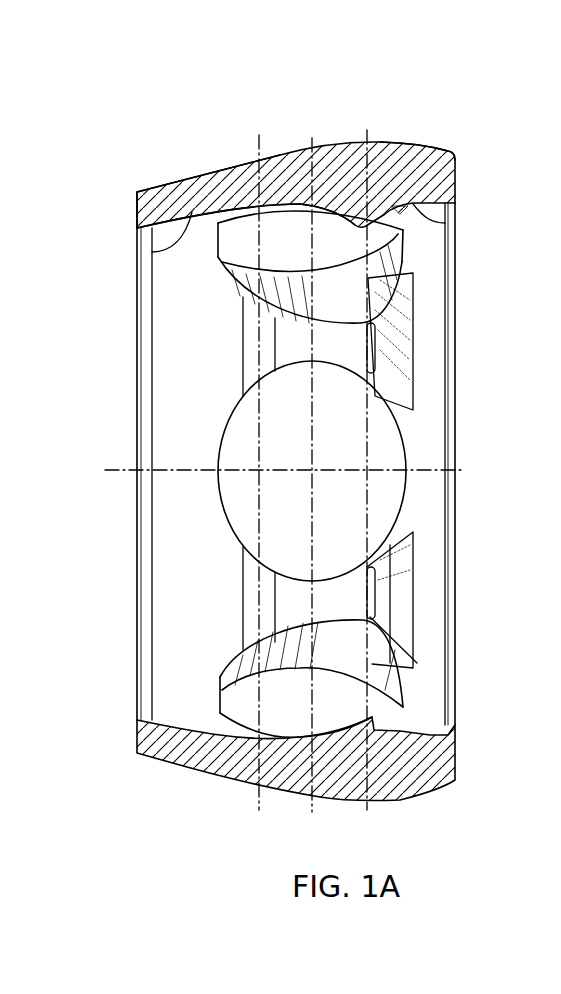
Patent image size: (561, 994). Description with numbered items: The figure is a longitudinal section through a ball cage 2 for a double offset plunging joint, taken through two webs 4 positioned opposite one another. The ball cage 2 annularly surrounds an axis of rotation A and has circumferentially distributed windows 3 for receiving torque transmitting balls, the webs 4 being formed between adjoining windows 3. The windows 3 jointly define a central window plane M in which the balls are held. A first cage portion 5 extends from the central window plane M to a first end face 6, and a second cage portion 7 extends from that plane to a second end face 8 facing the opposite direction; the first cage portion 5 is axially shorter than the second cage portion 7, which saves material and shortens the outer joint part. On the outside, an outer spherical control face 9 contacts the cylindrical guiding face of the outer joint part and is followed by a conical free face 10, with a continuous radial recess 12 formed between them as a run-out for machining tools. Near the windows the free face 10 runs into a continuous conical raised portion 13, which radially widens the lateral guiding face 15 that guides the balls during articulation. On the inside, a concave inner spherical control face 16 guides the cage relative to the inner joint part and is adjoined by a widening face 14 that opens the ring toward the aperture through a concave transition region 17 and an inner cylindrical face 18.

The ball cage 2 is at (147, 127).
The window 3 is at (378, 408).
The web 4 is at (330, 347).
The first cage portion 5 is at (385, 157).
The first end face 6 is at (457, 176).
The second cage portion 7 is at (207, 193).
The second end face 8 is at (137, 208).
The outer spherical control face 9 is at (418, 147).
The conical free face 10 is at (173, 182).
The continuous radial recess 12 is at (258, 140).
The continuous conical raised portion 13 is at (227, 163).
The widening face 14 is at (445, 223).
The lateral guiding face 15 is at (222, 482).
The inner spherical control face 16 is at (152, 252).
The concave transition region 17 is at (372, 718).
The inner cylindrical face 18 is at (430, 734).
The central window plane M is at (313, 138).
The axis of rotation A is at (462, 470).